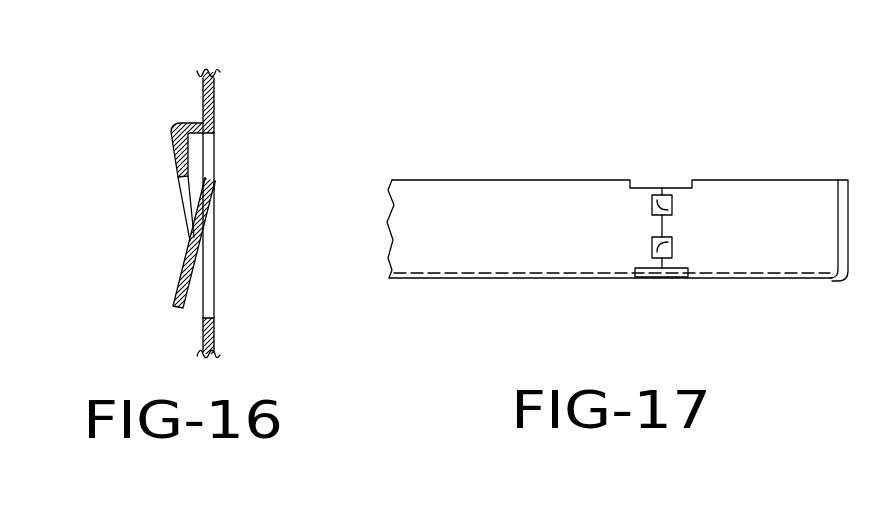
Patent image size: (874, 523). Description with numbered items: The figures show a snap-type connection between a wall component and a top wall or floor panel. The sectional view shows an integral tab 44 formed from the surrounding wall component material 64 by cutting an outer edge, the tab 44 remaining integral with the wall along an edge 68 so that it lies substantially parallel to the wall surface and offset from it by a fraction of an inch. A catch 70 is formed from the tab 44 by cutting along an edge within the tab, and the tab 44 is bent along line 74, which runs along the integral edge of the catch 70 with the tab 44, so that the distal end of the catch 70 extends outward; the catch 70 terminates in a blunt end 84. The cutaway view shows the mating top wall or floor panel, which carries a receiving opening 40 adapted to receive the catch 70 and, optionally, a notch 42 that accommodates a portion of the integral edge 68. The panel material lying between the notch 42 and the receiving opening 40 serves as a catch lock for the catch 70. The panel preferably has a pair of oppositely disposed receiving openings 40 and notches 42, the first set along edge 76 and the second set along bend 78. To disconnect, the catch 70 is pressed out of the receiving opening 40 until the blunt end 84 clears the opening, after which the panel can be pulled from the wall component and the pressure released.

In FIG. 17, the receiving opening 40 is at (660, 208).
In FIG. 17, the notch 42 is at (673, 187).
In FIG. 16, the tab 44 is at (108, 291).
In FIG. 16, the wall component material 64 is at (201, 341).
In FIG. 16, the edge 68 is at (173, 126).
In FIG. 16, the catch 70 is at (204, 208).
In FIG. 16, the line 74 is at (190, 243).
In FIG. 17, the edge 76 is at (520, 181).
In FIG. 17, the bend 78 is at (524, 279).
In FIG. 16, the blunt end of the catch 84 is at (203, 186).